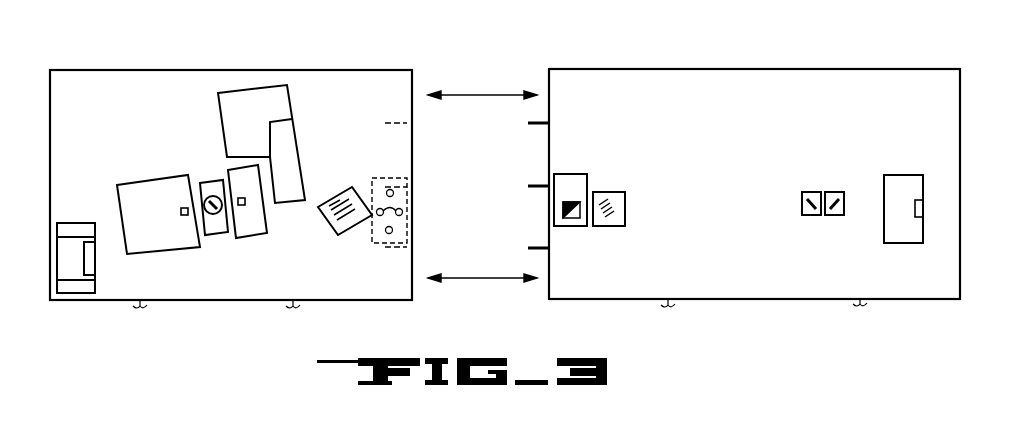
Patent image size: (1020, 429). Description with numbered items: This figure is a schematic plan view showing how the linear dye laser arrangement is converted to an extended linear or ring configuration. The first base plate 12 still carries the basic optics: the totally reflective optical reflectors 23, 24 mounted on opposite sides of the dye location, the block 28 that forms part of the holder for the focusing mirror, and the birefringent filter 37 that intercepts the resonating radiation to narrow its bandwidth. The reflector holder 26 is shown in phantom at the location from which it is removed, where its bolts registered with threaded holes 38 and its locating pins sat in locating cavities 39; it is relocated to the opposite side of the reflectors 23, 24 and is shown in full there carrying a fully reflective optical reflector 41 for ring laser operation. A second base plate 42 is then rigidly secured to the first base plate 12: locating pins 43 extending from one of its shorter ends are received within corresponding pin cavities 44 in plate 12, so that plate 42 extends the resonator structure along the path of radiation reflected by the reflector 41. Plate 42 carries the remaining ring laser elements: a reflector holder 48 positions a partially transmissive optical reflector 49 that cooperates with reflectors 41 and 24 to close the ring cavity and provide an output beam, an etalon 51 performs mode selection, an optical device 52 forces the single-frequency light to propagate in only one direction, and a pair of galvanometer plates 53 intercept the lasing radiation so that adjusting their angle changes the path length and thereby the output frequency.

The first base plate 12 is at (123, 112).
The optical reflector 23 is at (242, 206).
The optical reflector 24 is at (185, 216).
The reflector holder 26 is at (72, 240).
The block 28 is at (283, 100).
The birefringent filter 37 is at (333, 228).
The threaded holes 38 is at (387, 192).
The locating cavities 39 is at (402, 212).
The fully reflective optical reflector 41 is at (95, 262).
The second base plate 42 is at (662, 115).
The locating pins 43 is at (535, 128).
The pin cavities 44 is at (412, 123).
The reflector holder 48 is at (903, 178).
The partially transmissive optical reflector 49 is at (915, 204).
The etalon 51 is at (573, 177).
The optical device 52 is at (620, 220).
The galvanometer plates 53 is at (840, 217).